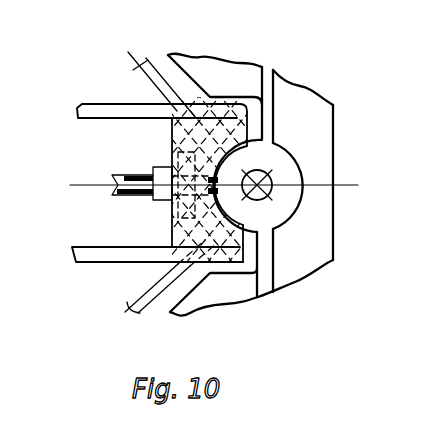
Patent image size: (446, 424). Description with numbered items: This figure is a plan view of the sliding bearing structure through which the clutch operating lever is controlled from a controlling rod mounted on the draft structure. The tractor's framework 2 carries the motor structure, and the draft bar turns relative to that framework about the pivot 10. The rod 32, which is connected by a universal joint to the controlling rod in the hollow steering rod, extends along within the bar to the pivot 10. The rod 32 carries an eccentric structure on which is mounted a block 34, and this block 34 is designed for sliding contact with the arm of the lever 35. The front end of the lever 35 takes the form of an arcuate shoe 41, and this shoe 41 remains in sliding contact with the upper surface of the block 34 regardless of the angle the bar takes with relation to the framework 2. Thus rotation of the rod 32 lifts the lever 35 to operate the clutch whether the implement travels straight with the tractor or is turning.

The framework 2 is at (310, 224).
The pivot 10 is at (265, 182).
The rod 32 is at (115, 193).
The block 34 is at (172, 208).
The lever 35 is at (110, 112).
The arcuate shoe 41 is at (172, 141).